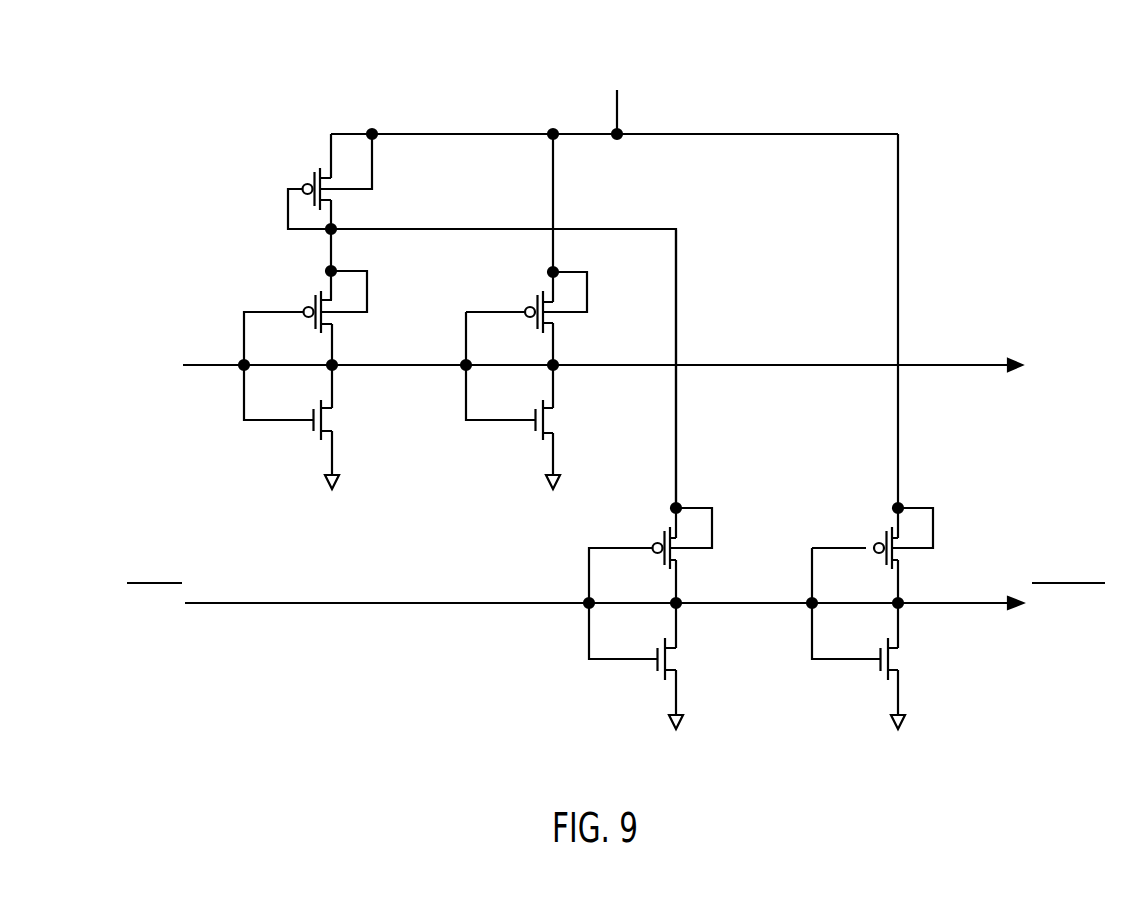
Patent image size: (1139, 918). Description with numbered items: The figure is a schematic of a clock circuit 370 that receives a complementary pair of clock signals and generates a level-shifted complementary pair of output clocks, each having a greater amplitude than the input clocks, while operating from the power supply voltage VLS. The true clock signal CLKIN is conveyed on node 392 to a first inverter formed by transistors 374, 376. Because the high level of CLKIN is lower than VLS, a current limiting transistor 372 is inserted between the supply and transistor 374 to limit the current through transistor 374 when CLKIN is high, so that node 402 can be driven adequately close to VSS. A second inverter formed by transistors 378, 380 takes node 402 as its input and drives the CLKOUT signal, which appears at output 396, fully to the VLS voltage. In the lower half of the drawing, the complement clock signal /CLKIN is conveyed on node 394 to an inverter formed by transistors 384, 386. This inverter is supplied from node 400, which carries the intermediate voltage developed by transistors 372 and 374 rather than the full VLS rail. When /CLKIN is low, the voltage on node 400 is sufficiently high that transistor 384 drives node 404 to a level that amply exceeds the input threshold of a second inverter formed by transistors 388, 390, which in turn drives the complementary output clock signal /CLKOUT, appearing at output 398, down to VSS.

The clock circuit 370 is at (988, 49).
The current limiting transistor 372 is at (320, 168).
The transistor 374 is at (320, 293).
The transistor 376 is at (320, 440).
The transistor 378 is at (538, 292).
The transistor 380 is at (540, 442).
The transistor 384 is at (666, 530).
The transistor 386 is at (662, 678).
The transistor 388 is at (888, 530).
The transistor 390 is at (885, 678).
The node 392 is at (213, 362).
The node 394 is at (272, 600).
The CLKOUT output node 396 is at (967, 363).
The complementary CLKOUT output node 398 is at (980, 600).
The node 400 is at (475, 228).
The node 402 is at (415, 362).
The node 404 is at (765, 600).